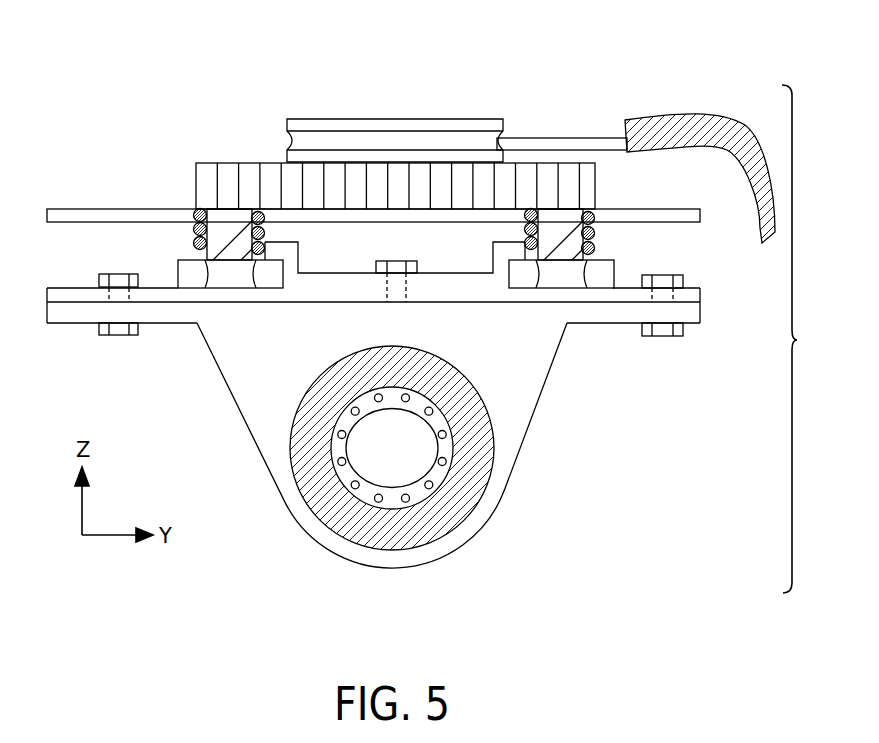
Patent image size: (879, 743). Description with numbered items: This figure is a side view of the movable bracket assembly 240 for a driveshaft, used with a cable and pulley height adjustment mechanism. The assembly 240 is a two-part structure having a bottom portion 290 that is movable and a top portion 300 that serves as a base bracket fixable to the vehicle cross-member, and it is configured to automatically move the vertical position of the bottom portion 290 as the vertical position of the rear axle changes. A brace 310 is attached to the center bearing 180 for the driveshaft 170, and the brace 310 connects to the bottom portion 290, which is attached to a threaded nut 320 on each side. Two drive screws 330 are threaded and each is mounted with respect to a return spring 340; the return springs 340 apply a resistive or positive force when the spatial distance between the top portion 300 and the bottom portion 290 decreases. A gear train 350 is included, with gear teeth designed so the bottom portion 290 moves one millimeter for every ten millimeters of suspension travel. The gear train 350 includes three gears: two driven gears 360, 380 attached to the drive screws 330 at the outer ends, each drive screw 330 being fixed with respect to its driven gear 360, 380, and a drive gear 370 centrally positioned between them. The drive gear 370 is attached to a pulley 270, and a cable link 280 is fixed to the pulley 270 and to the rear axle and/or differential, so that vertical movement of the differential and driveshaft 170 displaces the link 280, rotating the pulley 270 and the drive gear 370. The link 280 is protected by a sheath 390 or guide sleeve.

The driveshaft 170 is at (410, 461).
The center bearing 180 is at (437, 480).
The movable bracket assembly 240 is at (812, 339).
The pulley 270 is at (445, 118).
The cable link 280 is at (548, 133).
The bottom portion 290 is at (690, 313).
The top portion 300 is at (102, 215).
The brace 310 is at (505, 460).
The threaded nut 320 is at (178, 265).
The drive screw 330 is at (220, 237).
The return spring 340 is at (265, 233).
The gear train 350 is at (202, 110).
The driven gear 360 is at (202, 175).
The drive gear 370 is at (290, 170).
The driven gear 380 is at (580, 173).
The sheath 390 is at (665, 130).